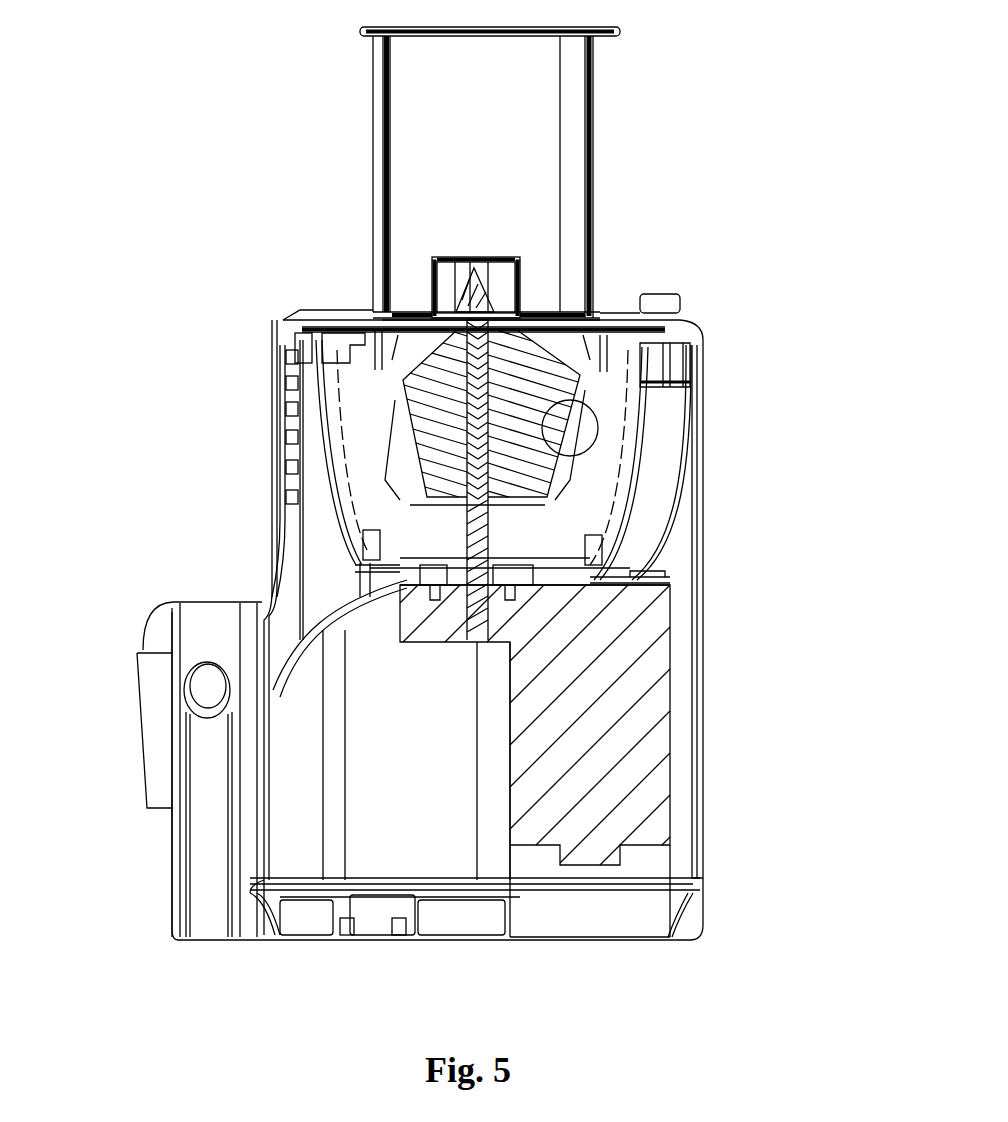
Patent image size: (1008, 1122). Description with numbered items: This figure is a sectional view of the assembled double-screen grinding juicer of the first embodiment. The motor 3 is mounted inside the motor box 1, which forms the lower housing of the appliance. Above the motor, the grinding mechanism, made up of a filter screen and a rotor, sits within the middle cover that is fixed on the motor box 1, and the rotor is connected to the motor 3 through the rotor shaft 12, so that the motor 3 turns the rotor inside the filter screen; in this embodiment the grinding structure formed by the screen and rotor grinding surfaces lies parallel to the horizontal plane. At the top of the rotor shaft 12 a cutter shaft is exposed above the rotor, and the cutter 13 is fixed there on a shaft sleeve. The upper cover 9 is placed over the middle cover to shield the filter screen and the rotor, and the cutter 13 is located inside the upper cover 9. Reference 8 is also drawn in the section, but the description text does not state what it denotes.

The motor box 1 is at (298, 812).
The motor 3 is at (647, 741).
The squeezing screw 8 is at (522, 372).
The upper cover 9 is at (378, 125).
The rotor shaft 12 is at (455, 440).
The cutter 13 is at (465, 285).